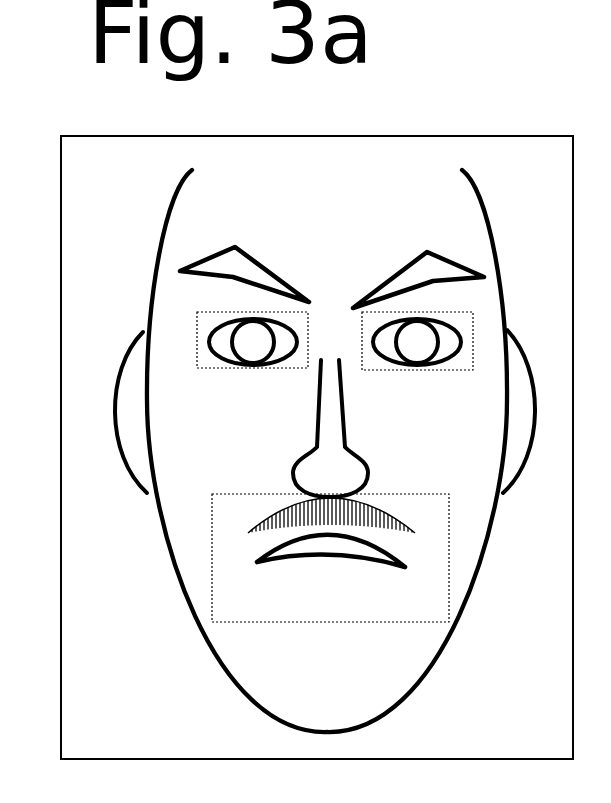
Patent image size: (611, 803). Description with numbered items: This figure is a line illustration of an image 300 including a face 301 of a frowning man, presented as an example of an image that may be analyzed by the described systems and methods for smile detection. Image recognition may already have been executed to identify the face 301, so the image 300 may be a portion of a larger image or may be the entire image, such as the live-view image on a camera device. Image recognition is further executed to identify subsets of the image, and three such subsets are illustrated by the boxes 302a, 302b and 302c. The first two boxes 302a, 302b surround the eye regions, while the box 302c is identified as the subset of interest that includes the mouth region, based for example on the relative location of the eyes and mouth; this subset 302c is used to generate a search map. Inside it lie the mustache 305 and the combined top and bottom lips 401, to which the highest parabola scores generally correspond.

The image 300 is at (537, 137).
The face 301 is at (168, 195).
The box 302a is at (213, 370).
The box 302b is at (398, 370).
The box 302c is at (405, 493).
The mustache 305 is at (410, 527).
The combined top and bottom lips 401 is at (288, 557).